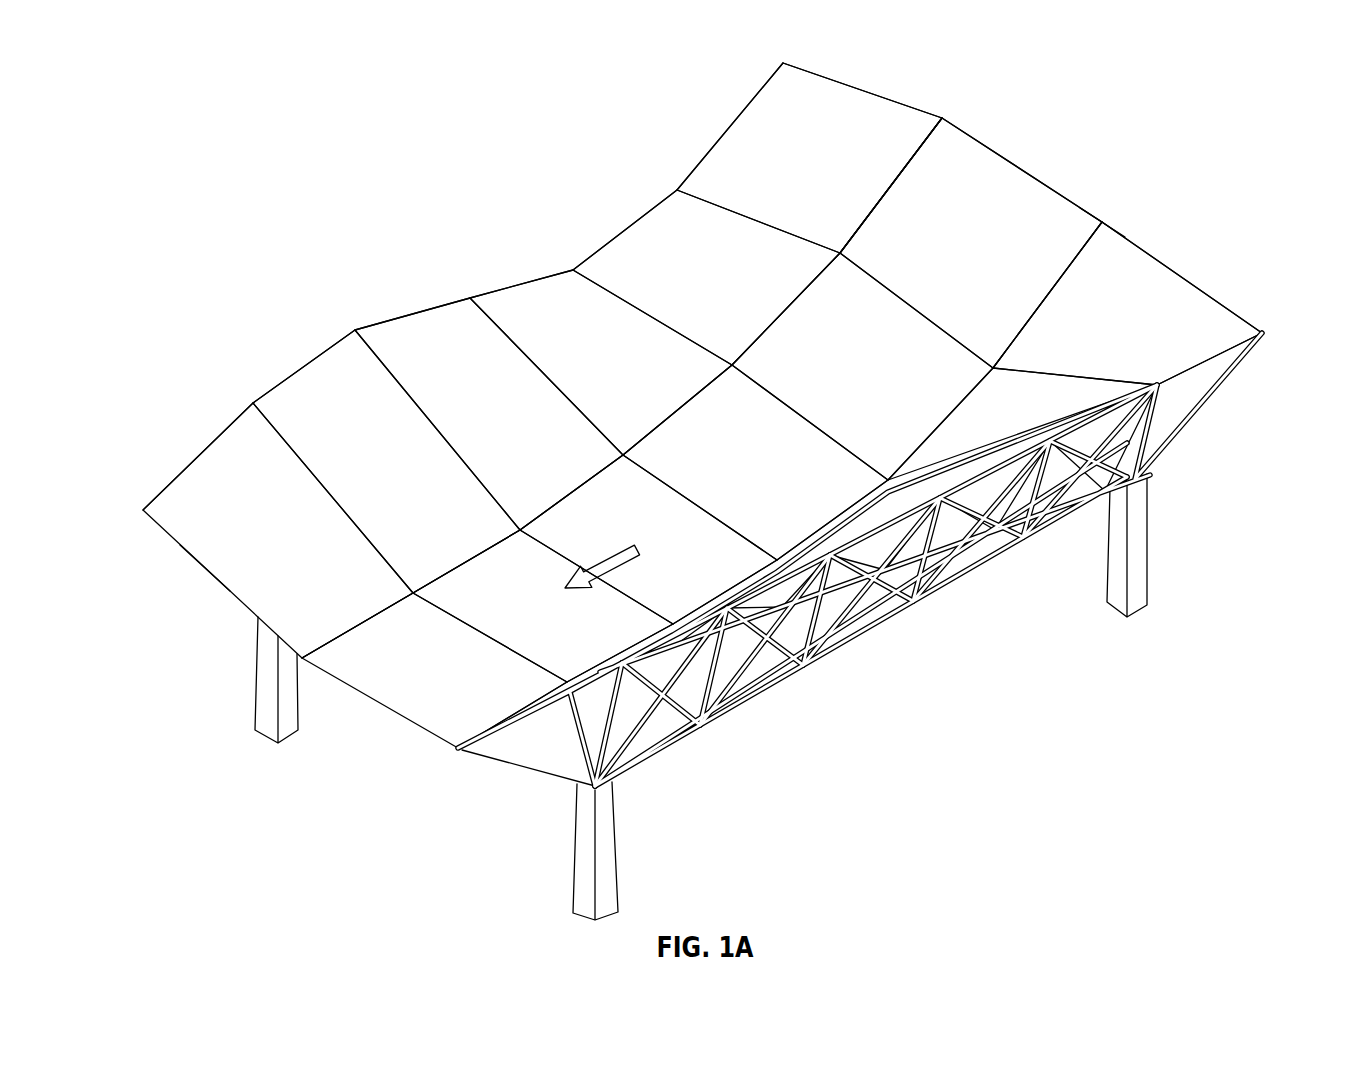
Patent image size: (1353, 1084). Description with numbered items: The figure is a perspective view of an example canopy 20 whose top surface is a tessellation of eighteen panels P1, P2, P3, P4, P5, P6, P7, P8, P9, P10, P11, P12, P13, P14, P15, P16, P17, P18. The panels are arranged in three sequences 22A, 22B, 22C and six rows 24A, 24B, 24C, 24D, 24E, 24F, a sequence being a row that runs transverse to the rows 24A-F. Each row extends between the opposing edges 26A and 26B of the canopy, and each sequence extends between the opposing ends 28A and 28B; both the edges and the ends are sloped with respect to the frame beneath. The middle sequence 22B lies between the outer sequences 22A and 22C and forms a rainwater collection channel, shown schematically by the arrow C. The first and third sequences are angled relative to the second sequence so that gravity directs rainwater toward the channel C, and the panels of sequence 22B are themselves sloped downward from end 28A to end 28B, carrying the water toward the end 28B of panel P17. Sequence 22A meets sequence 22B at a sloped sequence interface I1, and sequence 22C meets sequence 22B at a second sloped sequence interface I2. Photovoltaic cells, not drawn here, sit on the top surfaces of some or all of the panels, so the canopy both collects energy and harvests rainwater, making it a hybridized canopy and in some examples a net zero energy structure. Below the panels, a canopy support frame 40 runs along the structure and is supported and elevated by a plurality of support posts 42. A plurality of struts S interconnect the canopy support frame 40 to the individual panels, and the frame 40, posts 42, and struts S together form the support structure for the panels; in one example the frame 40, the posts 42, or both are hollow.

The canopy 20 is at (700, 480).
The first sequence 22A is at (908, 76).
The second sequence 22B is at (992, 132).
The third sequence 22C is at (1219, 282).
The first row 24A is at (714, 120).
The second row 24B is at (609, 222).
The third row 24C is at (518, 262).
The fourth row 24D is at (394, 284).
The fifth row 24E is at (258, 338).
The sixth row 24F is at (178, 418).
The edge 26A is at (469, 290).
The edge 26B is at (1192, 375).
The end 28A is at (1128, 237).
The end 28B is at (204, 573).
The sequence interface I1 is at (904, 167).
The sequence interface I2 is at (1062, 272).
The panel P1 is at (783, 176).
The panel P2 is at (933, 241).
The panel P3 is at (1098, 331).
The panel P4 is at (668, 281).
The panel P5 is at (863, 371).
The panel P6 is at (993, 423).
The panel P7 is at (568, 349).
The panel P8 is at (736, 481).
The panel P9 is at (872, 503).
The panel P10 is at (455, 411).
The panel P11 is at (607, 524).
The panel P12 is at (770, 567).
The panel P13 is at (355, 460).
The panel P14 is at (477, 601).
The panel P15 is at (660, 633).
The panel P16 is at (247, 541).
The panel P17 is at (412, 686).
The panel P18 is at (560, 693).
The rainwater collection channel C is at (614, 565).
The struts S is at (617, 777).
The canopy support frame 40 is at (860, 582).
The support posts 42 is at (265, 703).